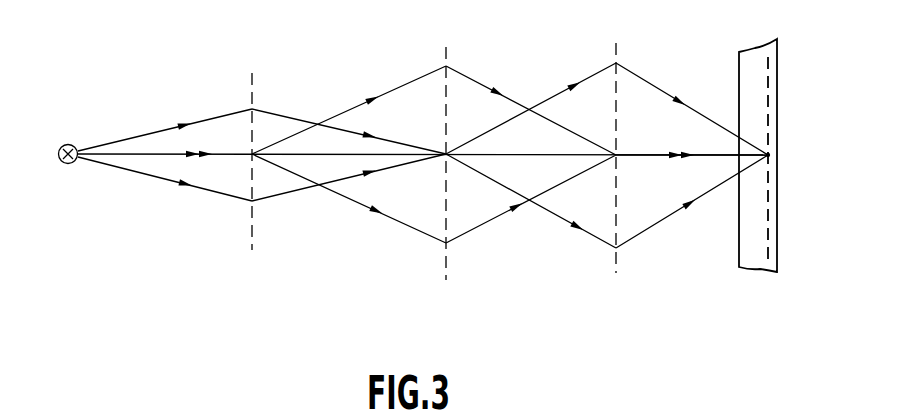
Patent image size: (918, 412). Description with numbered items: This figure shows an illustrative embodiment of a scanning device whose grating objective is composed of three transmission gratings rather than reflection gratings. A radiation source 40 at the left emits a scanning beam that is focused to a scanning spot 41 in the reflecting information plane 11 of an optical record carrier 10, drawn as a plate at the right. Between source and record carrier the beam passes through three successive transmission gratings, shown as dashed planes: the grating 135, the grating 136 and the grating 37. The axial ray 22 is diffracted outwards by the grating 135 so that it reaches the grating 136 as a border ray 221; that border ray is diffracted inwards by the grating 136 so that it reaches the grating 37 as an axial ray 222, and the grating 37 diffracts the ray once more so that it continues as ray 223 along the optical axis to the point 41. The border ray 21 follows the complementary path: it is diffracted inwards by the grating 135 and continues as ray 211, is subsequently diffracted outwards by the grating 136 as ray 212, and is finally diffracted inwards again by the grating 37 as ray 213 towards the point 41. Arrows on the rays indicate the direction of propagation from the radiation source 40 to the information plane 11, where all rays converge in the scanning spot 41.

The radiation source 40 is at (73, 164).
The border ray 21 is at (205, 117).
The axial ray 22 is at (188, 157).
The border ray 211 is at (284, 116).
The border ray 212 is at (593, 252).
The border ray 213 is at (658, 89).
The border ray 221 is at (393, 237).
The axial ray 222 is at (489, 87).
The ray along the optical axis 223 is at (701, 158).
The transmission grating 135 is at (250, 257).
The transmission grating 136 is at (444, 263).
The transmission grating 37 is at (614, 257).
The optical record carrier 10 is at (758, 49).
The information plane 11 is at (768, 264).
The scanning spot 41 is at (772, 153).